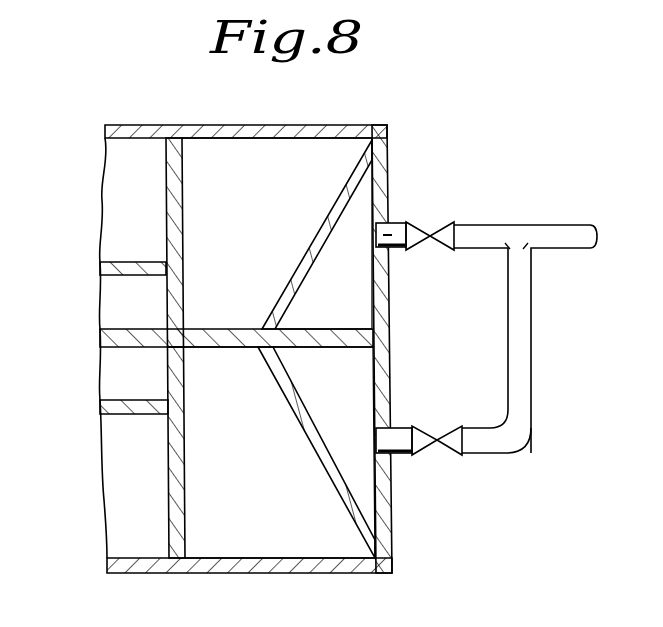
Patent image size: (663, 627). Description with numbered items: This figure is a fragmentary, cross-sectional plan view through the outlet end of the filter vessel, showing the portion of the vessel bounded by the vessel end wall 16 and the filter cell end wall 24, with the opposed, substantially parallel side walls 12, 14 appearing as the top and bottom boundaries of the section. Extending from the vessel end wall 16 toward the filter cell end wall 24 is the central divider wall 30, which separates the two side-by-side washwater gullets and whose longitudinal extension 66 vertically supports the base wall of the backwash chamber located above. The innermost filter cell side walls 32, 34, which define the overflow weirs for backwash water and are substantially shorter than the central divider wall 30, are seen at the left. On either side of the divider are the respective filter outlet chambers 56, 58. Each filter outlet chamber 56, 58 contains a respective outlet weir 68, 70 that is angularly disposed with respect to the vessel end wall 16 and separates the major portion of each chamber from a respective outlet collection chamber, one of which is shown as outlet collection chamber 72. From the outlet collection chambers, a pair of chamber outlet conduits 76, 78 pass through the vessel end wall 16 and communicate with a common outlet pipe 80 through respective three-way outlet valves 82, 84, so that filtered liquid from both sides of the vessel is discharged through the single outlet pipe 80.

The side wall 12 is at (267, 124).
The side wall 14 is at (245, 575).
The vessel end wall 16 is at (390, 315).
The filter cell end wall 24 is at (166, 205).
The central divider wall 30 is at (123, 329).
The filter cell side wall 32 is at (123, 262).
The filter cell side wall 34 is at (123, 400).
The filter outlet chamber 56 is at (202, 158).
The filter outlet chamber 58 is at (203, 498).
The longitudinal extension of central divider wall 66 is at (203, 348).
The outlet weir 68 is at (310, 243).
The outlet weir 70 is at (315, 453).
The outlet collection chamber 72 is at (333, 153).
The chamber outlet conduit 76 is at (398, 224).
The chamber outlet conduit 78 is at (403, 455).
The common outlet pipe 80 is at (567, 230).
The three-way outlet valve 82 is at (443, 227).
The three-way outlet valve 84 is at (452, 454).